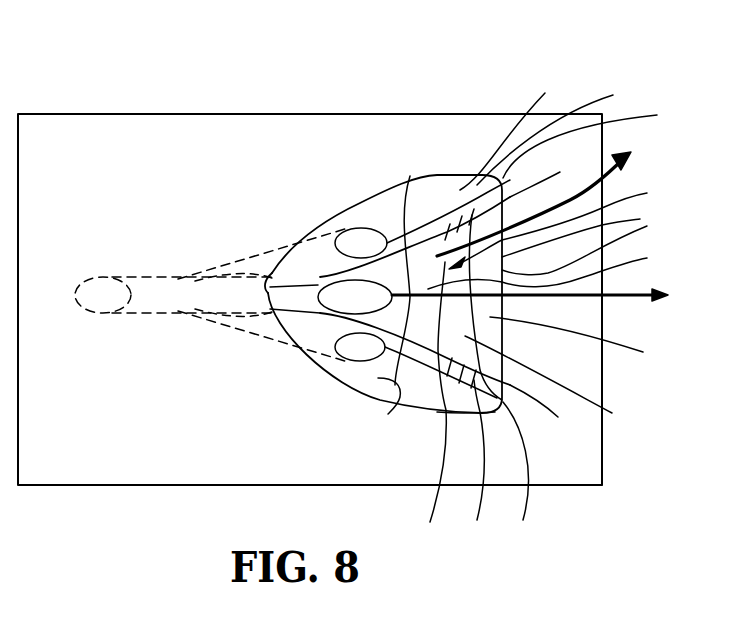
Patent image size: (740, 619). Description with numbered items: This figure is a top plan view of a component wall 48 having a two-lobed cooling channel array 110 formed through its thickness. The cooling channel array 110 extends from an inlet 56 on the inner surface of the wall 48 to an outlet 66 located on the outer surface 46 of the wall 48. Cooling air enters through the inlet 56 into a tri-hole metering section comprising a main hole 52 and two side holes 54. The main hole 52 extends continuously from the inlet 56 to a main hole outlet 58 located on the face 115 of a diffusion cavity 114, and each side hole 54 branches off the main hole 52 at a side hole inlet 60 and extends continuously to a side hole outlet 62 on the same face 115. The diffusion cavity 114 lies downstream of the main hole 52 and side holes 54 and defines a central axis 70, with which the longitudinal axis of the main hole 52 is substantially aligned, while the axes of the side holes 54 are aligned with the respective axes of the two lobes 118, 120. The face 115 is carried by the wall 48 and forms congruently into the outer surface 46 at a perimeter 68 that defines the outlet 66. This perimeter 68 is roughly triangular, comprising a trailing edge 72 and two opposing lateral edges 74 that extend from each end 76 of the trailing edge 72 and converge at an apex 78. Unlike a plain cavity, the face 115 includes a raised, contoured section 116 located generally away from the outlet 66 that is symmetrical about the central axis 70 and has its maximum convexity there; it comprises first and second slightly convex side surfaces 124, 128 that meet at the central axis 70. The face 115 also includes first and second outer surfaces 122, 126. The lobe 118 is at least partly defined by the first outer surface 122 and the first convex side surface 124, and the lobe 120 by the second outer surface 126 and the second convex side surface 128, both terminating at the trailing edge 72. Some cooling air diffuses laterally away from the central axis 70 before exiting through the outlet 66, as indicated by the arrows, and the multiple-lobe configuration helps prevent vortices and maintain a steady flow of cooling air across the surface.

The outer surface 46 is at (90, 147).
The wall 48 is at (558, 486).
The main hole 52 is at (152, 300).
The side holes 54 is at (277, 252).
The inlet 56 is at (78, 300).
The main hole outlet 58 is at (405, 330).
The side hole inlet 60 is at (193, 273).
The side hole outlet 62 is at (352, 228).
The outlet 66 is at (417, 410).
The perimeter 68 is at (470, 463).
The central axis 70 is at (544, 298).
The trailing edge 72 is at (589, 244).
The lateral edges 74 is at (411, 176).
The end 76 is at (594, 324).
The apex 78 is at (267, 297).
The cooling channel array 110 is at (569, 225).
The diffusion cavity 114 is at (463, 188).
The face 115 is at (587, 345).
The raised contoured section 116 is at (559, 269).
The lobe 118 is at (541, 292).
The lobe 120 is at (550, 415).
The first outer surface 122 is at (521, 132).
The first convex side surface 124 is at (566, 131).
The second outer surface 126 is at (400, 397).
The second convex side surface 128 is at (421, 404).